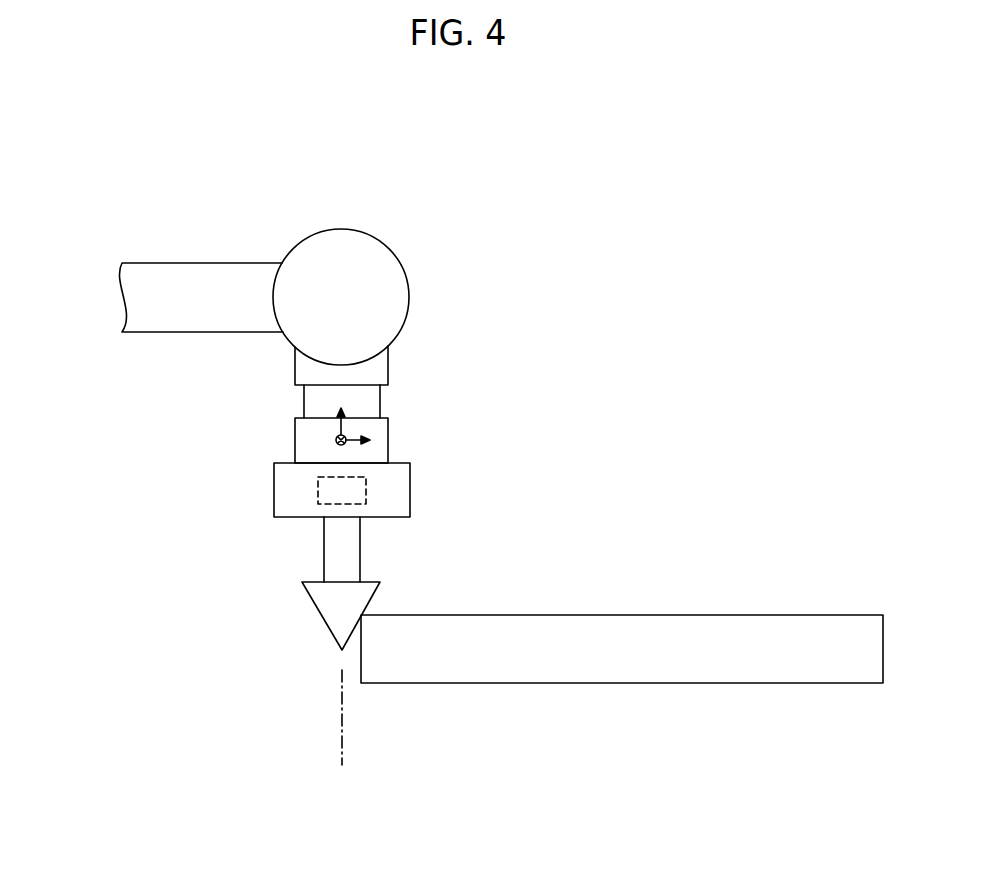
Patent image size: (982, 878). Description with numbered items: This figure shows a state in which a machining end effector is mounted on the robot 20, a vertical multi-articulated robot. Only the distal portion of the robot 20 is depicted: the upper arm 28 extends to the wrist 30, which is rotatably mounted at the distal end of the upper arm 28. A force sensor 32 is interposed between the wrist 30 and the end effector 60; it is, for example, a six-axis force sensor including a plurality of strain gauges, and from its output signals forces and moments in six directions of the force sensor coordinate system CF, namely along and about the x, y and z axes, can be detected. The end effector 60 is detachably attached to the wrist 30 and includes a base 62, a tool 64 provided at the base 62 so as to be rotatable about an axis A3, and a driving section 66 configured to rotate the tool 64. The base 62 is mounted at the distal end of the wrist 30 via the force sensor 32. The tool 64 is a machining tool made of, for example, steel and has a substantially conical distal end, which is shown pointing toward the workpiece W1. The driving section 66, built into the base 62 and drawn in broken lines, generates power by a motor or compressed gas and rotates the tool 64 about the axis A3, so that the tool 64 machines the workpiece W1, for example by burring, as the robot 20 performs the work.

The robot 20 is at (477, 200).
The upper arm 28 is at (196, 311).
The wrist 30 is at (388, 372).
The force sensor 32 is at (388, 425).
The end effector 60 is at (137, 487).
The base 62 is at (410, 485).
The tool 64 is at (322, 602).
The driving section 66 is at (318, 488).
The workpiece W1 is at (630, 669).
The axis A3 is at (341, 718).
The force sensor coordinate system CF is at (339, 431).